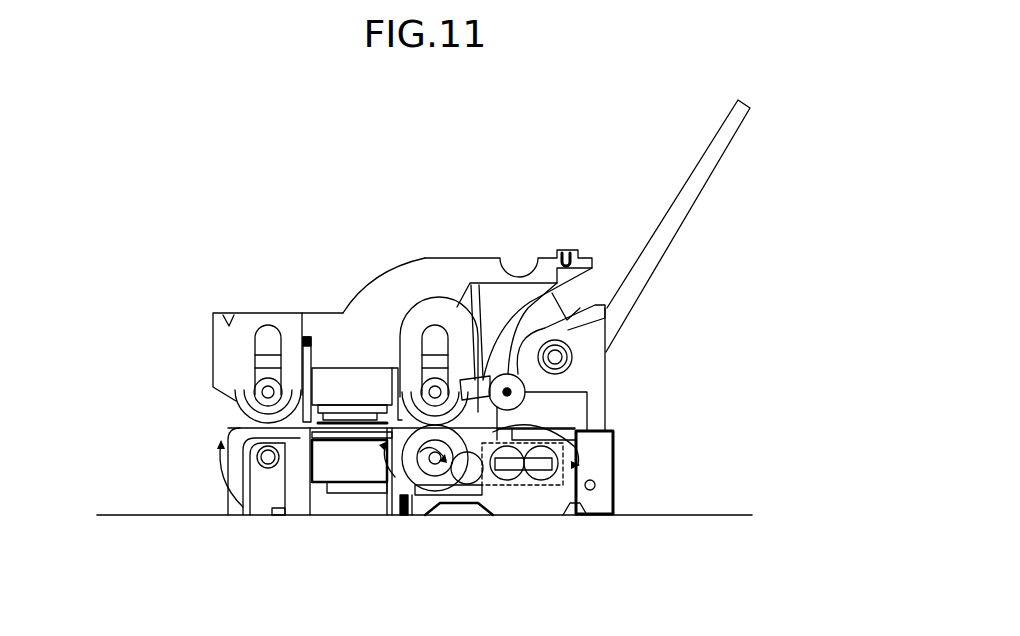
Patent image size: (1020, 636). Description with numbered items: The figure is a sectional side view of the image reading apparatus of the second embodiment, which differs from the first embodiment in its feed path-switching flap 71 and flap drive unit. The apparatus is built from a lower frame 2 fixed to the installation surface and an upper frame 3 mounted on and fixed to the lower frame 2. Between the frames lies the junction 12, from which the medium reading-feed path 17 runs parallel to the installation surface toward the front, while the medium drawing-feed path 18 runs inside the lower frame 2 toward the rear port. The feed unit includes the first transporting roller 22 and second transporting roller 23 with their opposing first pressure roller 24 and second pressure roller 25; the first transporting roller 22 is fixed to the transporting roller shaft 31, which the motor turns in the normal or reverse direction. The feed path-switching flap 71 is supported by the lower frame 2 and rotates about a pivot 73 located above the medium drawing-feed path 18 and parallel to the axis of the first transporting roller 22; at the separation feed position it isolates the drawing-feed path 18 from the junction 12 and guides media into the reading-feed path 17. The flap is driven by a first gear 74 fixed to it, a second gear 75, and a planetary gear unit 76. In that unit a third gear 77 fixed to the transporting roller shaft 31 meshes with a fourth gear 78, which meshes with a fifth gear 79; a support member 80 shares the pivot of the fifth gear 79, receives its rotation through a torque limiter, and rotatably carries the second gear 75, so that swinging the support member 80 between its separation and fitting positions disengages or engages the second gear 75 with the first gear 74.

The lower frame 2 is at (237, 480).
The upper frame 3 is at (213, 349).
The junction 12 is at (481, 385).
The medium reading-feed path 17 is at (289, 397).
The medium drawing-feed path 18 is at (553, 418).
The first transporting roller 22 is at (438, 492).
The second transporting roller 23 is at (262, 493).
The first pressure roller 24 is at (432, 328).
The second pressure roller 25 is at (262, 352).
The transporting roller shaft 31 is at (416, 500).
The feed path-switching flap 71 is at (477, 395).
The pivot 73 is at (600, 353).
The first gear 74 is at (527, 390).
The second gear 75 is at (565, 490).
The planetary gear unit 76 is at (600, 463).
The third gear 77 is at (457, 497).
The fourth gear 78 is at (470, 486).
The fifth gear 79 is at (520, 482).
The support member 80 is at (530, 482).